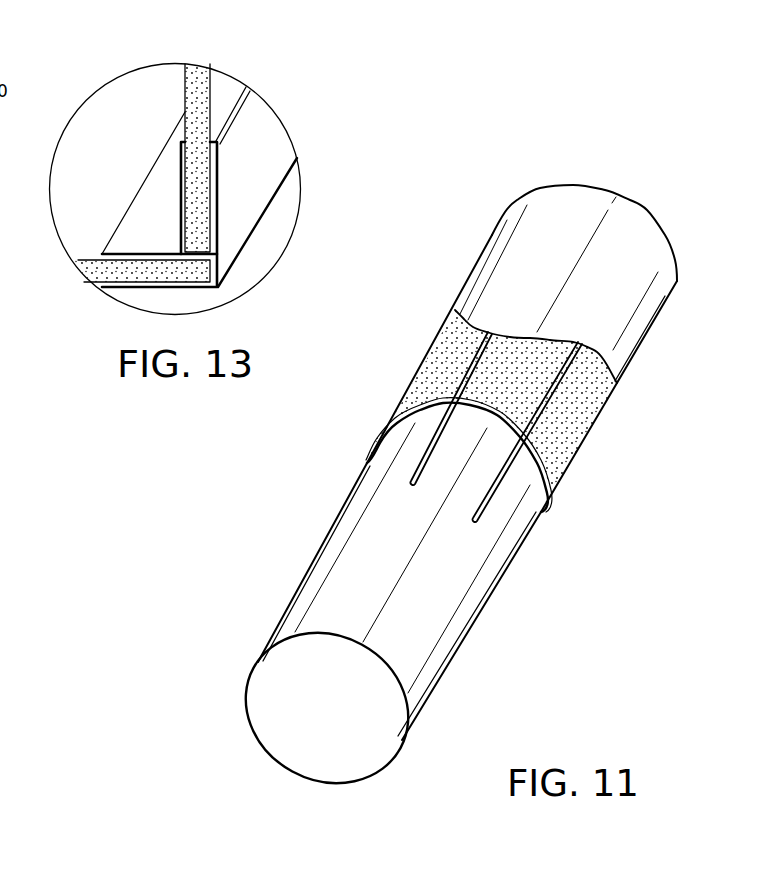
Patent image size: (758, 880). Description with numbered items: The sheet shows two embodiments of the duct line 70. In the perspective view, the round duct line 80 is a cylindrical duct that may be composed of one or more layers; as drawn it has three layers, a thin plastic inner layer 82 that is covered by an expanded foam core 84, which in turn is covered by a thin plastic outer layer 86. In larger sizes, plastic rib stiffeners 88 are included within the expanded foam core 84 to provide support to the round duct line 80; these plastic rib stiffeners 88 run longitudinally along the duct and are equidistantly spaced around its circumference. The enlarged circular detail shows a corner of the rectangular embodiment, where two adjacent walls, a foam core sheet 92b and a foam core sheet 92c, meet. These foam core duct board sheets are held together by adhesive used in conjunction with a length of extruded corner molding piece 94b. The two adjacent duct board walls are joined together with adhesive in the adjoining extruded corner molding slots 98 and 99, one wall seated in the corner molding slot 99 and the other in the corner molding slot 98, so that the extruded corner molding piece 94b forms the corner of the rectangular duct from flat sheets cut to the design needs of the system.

In FIG. 11, the duct line 70 is at (340, 553).
In FIG. 11, the round duct line 80 is at (632, 208).
In FIG. 11, the thin plastic inner layer 82 is at (458, 625).
In FIG. 11, the expanded foam core 84 is at (583, 435).
In FIG. 11, the thin plastic outer layer 86 is at (653, 267).
In FIG. 11, the plastic rib stiffeners 88 is at (493, 497).
In FIG. 13, the foam core sheet 92b is at (200, 73).
In FIG. 13, the foam core sheet 92c is at (100, 275).
In FIG. 13, the extruded corner molding piece 94b is at (282, 135).
In FIG. 13, the extruded corner molding slot 98 is at (137, 293).
In FIG. 13, the extruded corner molding slot 99 is at (213, 229).